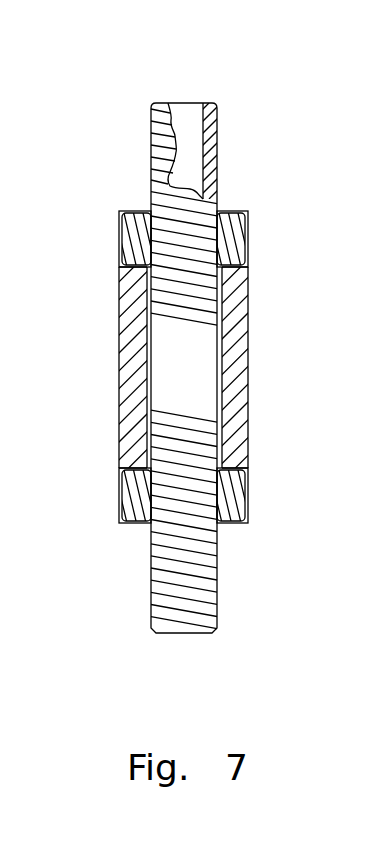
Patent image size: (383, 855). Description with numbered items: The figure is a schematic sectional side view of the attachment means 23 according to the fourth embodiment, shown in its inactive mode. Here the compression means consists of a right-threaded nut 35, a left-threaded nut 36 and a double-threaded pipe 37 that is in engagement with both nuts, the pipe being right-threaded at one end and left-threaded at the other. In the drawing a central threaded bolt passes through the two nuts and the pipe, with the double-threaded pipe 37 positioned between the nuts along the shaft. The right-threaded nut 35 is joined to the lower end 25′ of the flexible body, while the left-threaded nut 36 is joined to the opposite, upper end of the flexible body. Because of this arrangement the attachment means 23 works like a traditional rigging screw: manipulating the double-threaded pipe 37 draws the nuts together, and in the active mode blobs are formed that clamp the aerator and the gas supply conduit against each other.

The attachment means 23 is at (228, 82).
The lower end of the flexible body 25′ is at (135, 524).
The right-threaded nut 35 is at (233, 490).
The left-threaded nut 36 is at (236, 236).
The double-threaded pipe 37 is at (185, 368).